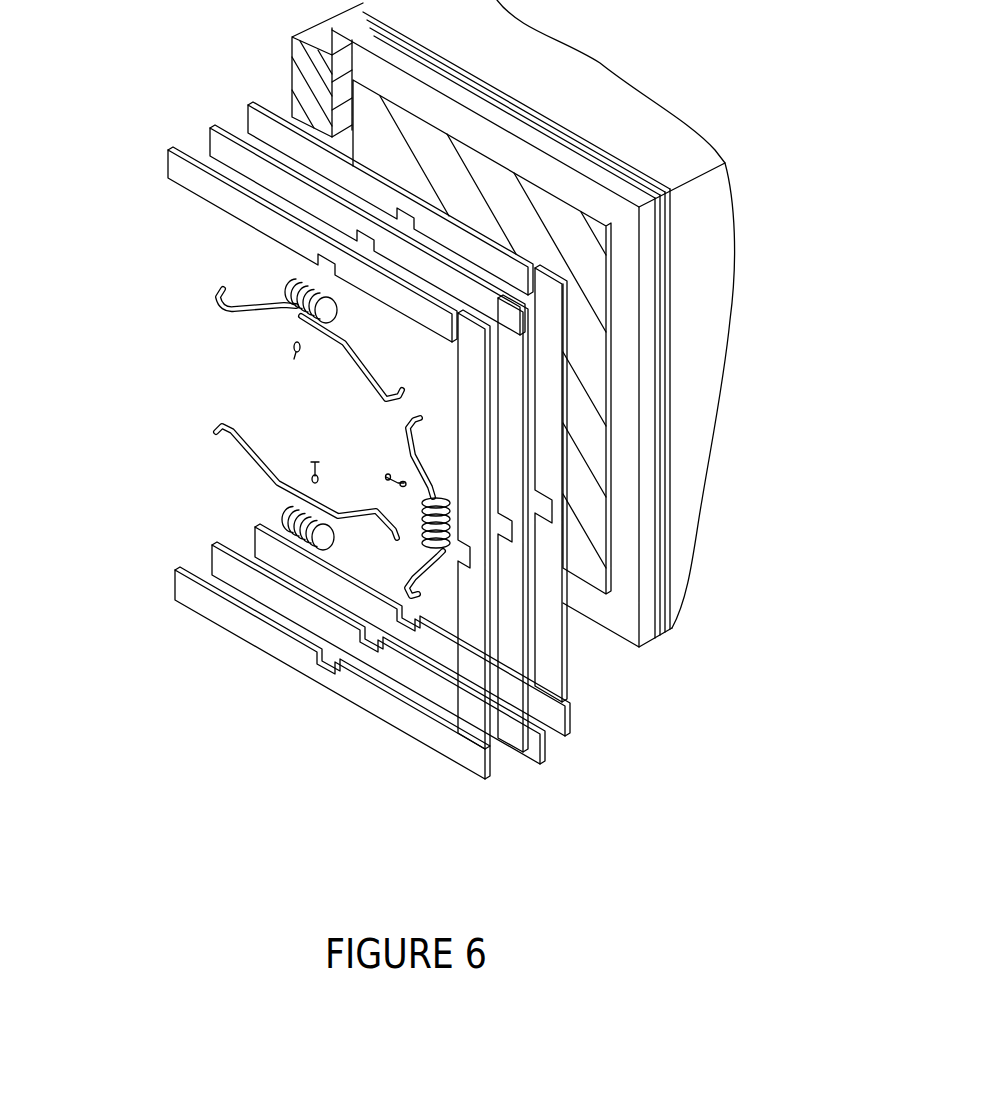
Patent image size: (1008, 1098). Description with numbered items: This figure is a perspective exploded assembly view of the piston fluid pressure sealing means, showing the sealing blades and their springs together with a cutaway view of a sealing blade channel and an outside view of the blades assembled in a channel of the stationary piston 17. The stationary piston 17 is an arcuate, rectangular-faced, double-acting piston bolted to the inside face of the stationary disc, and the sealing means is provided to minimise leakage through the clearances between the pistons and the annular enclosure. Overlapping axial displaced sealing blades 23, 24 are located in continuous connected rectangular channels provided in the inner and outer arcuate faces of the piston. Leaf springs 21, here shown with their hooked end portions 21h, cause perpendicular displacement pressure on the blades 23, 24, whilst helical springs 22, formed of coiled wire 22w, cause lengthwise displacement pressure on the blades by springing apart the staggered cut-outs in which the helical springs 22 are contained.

The stationary piston 17 is at (600, 67).
The axial displaced sealing blade 23 is at (600, 147).
The axial displaced sealing blade 24 is at (625, 597).
The leaf spring 21 is at (260, 459).
The spring arm hook 21h is at (312, 323).
The helical spring 22 is at (293, 514).
The spring wire 22w is at (293, 352).